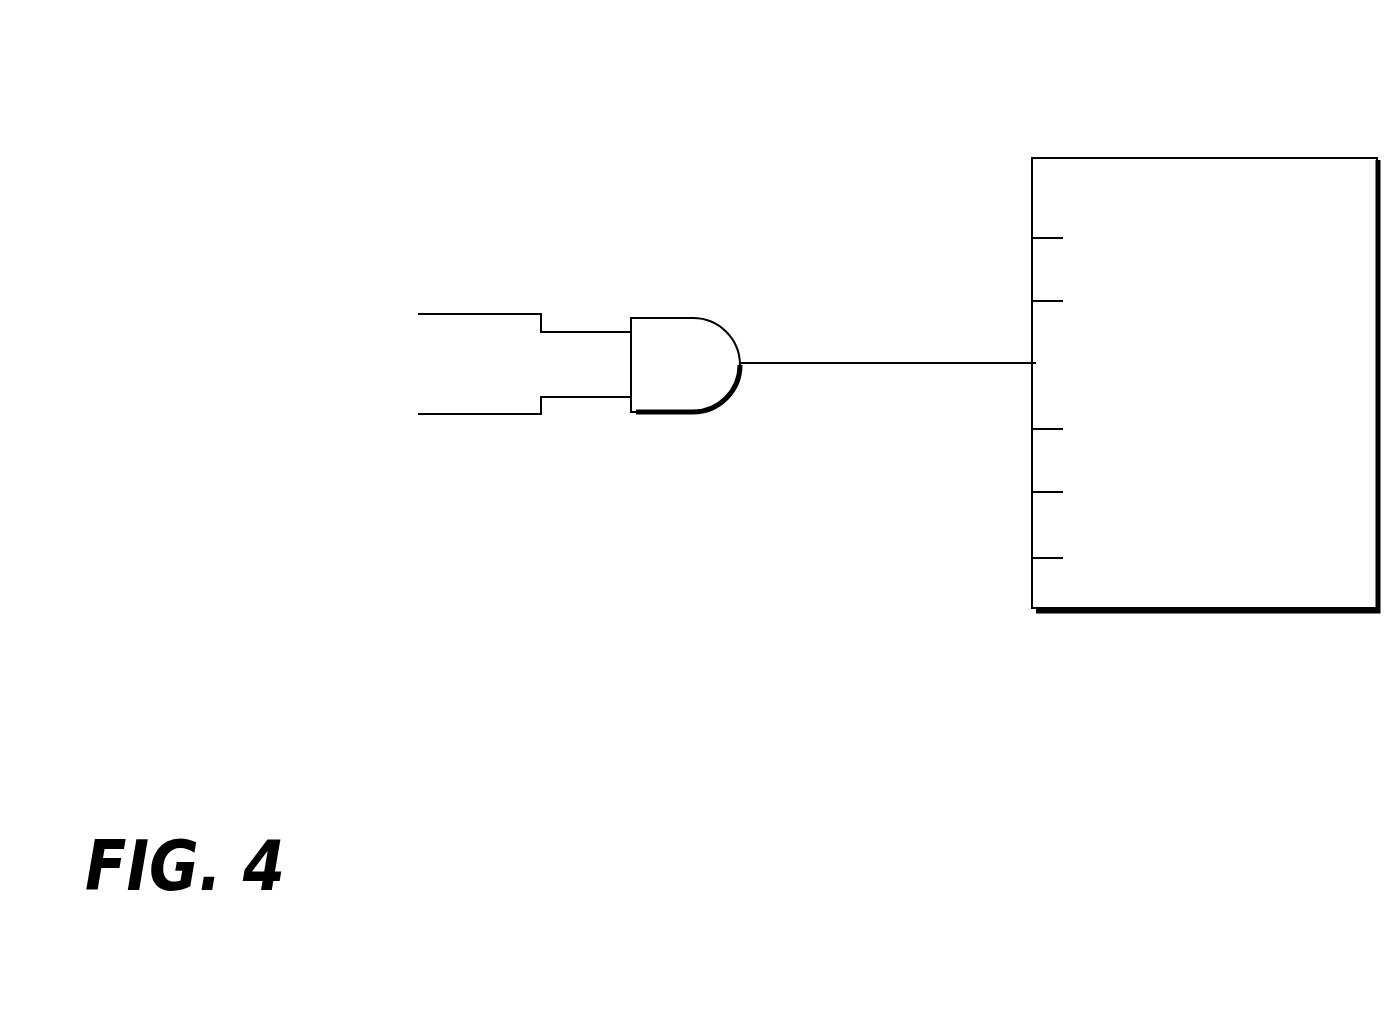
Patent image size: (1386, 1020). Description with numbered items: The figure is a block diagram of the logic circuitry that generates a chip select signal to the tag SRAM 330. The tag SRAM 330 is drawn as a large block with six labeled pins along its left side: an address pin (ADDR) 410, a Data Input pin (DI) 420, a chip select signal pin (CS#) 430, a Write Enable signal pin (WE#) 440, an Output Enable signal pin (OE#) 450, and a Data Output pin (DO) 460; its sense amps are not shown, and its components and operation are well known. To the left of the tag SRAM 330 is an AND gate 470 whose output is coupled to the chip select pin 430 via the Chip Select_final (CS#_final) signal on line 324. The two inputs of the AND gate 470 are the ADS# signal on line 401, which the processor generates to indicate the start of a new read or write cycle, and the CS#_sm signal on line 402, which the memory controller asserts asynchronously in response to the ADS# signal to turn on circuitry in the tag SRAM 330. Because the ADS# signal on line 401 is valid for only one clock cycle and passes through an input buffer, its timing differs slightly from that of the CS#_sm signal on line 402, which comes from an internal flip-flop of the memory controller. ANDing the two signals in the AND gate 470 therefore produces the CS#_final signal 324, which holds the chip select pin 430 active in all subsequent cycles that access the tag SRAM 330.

The ADS# signal line 401 is at (491, 304).
The CS#_sm signal line 402 is at (477, 428).
The AND gate 470 is at (683, 413).
The CS#_final signal line 324 is at (886, 351).
The tag SRAM 330 is at (1248, 158).
The address pin 410 is at (1107, 237).
The Data Input pin 420 is at (1087, 300).
The chip select signal pin 430 is at (1098, 364).
The Write Enable signal pin 440 is at (1101, 428).
The Output Enable signal pin 450 is at (1098, 490).
The Data Output pin 460 is at (1092, 555).